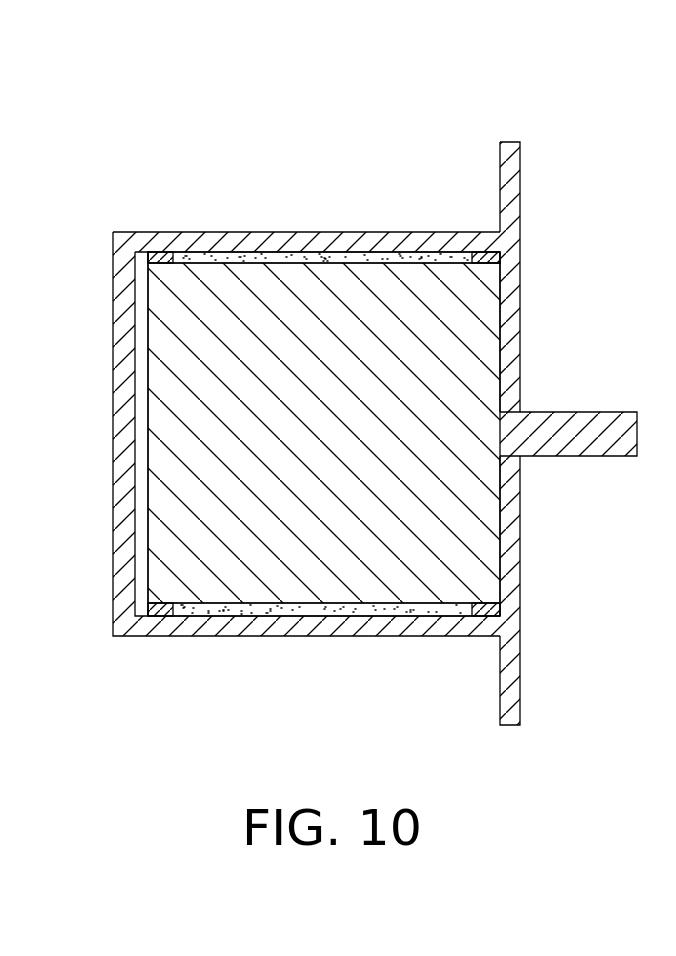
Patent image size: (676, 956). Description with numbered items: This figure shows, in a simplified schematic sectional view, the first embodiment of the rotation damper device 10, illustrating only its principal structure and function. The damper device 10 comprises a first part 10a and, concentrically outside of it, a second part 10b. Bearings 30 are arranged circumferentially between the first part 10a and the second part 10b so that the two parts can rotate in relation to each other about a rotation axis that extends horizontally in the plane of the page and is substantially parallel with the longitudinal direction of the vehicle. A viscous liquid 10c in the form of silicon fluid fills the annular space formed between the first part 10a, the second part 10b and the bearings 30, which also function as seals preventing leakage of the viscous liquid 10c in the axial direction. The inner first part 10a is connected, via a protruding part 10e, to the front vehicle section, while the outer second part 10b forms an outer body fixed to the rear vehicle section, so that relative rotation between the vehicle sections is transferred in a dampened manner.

The rotation damper device 10 is at (350, 384).
The first part 10a is at (313, 406).
The second part 10b is at (508, 280).
The viscous liquid 10c is at (307, 252).
The protruding part 10e is at (583, 440).
The bearings 30 is at (163, 258).